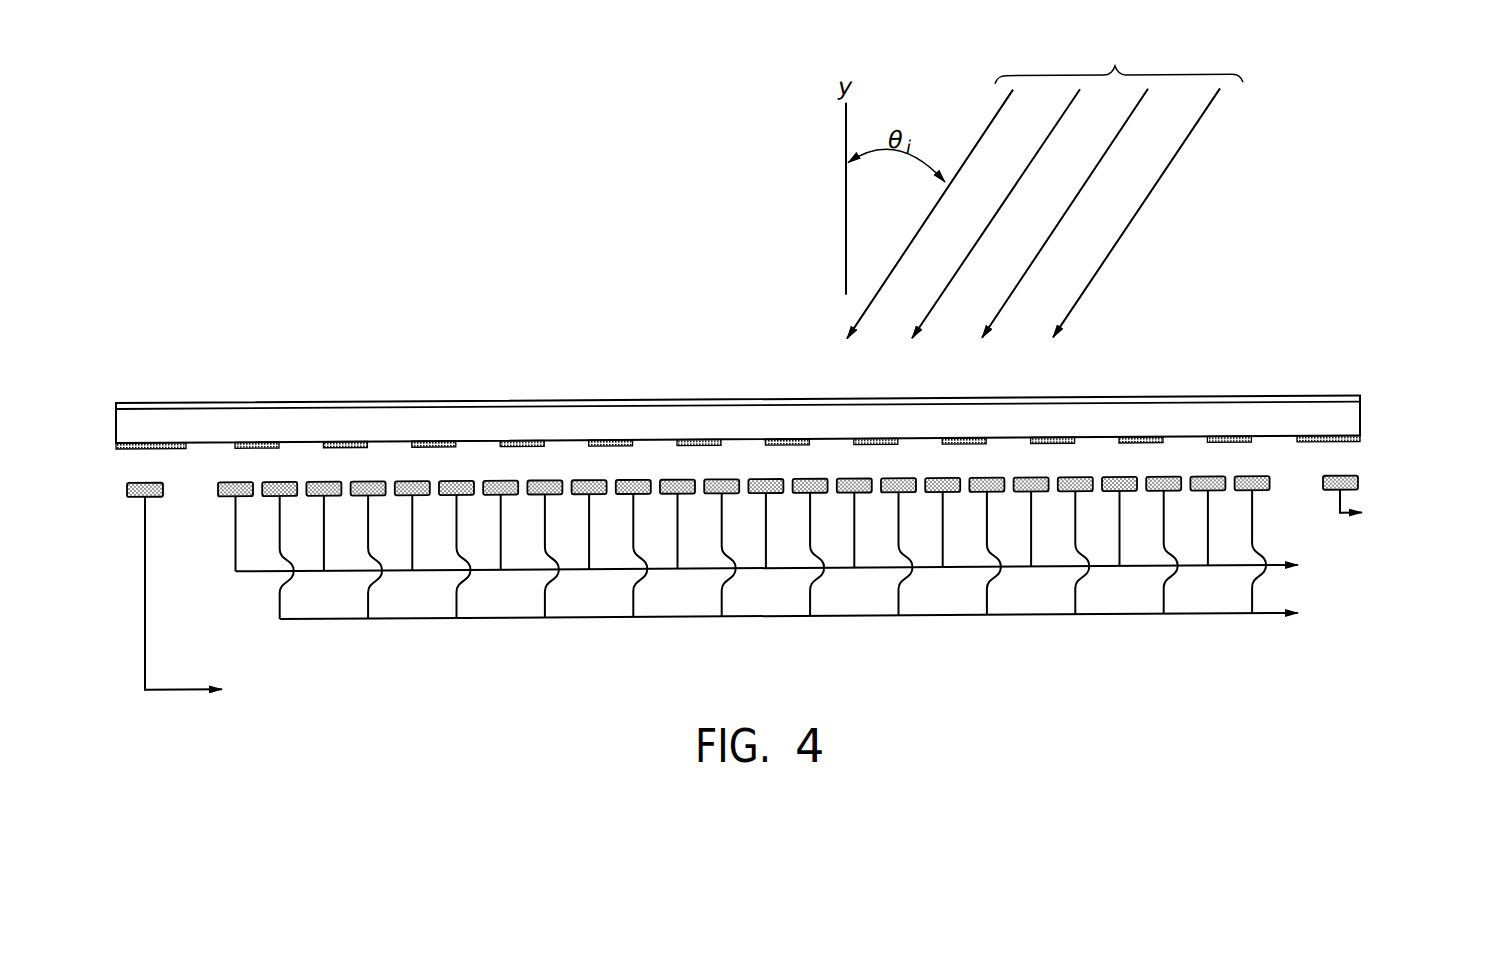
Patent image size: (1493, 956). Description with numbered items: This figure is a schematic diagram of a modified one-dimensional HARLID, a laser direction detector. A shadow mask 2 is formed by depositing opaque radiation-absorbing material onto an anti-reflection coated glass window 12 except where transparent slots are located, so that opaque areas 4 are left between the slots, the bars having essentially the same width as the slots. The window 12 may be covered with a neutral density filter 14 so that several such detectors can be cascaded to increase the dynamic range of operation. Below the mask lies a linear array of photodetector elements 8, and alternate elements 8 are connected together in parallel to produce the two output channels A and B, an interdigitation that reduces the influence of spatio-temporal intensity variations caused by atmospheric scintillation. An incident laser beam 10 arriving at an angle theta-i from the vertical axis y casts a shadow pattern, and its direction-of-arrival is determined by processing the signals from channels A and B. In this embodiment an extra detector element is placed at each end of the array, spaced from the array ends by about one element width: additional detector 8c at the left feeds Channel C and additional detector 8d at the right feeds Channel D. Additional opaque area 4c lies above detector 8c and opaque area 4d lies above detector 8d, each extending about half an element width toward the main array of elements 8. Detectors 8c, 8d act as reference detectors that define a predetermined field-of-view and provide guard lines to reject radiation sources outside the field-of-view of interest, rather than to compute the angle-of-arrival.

The shadow mask 2 is at (1365, 421).
The opaque areas 4 is at (440, 442).
The opaque area 4c is at (150, 443).
The opaque area 4d is at (1343, 456).
The photodetector elements 8 is at (283, 483).
The additional detector element 8c is at (155, 497).
The additional detector element 8d is at (1358, 486).
The incident laser beam 10 is at (1045, 187).
The AR-coated glass window 12 is at (1343, 424).
The neutral density filter 14 is at (362, 403).